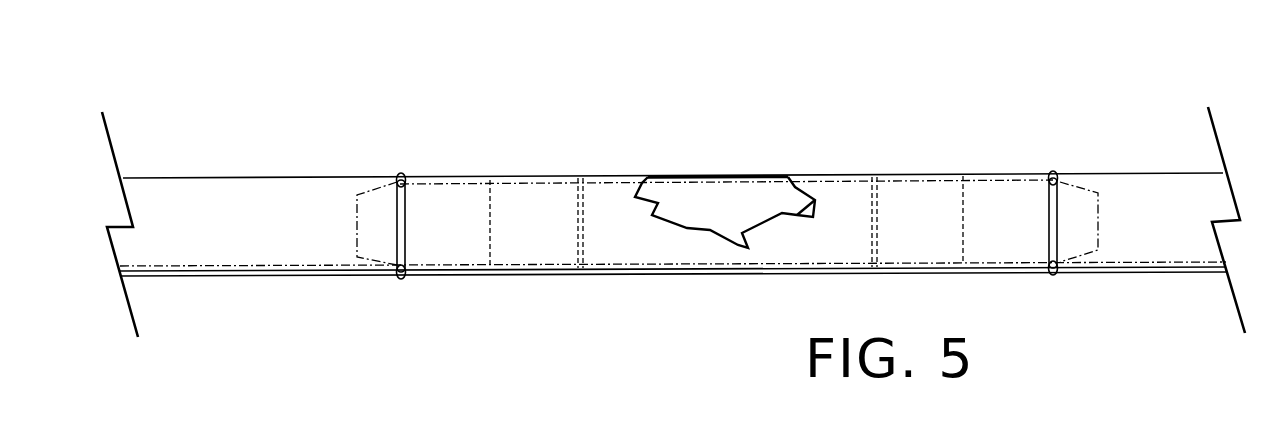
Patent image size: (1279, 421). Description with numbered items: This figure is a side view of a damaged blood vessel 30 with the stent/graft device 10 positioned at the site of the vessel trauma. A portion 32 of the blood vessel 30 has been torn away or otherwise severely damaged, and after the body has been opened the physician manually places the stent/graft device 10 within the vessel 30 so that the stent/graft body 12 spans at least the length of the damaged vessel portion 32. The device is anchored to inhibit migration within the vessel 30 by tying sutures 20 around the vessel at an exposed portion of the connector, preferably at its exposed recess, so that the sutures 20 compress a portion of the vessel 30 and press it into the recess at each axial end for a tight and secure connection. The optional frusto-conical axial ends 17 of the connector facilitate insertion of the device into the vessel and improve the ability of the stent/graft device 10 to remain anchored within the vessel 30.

The stent/graft device 10 is at (683, 168).
The stent/graft body 12 is at (752, 197).
The frusto-conical axial ends 17 is at (383, 195).
The sutures 20 is at (398, 172).
The blood vessel 30 is at (187, 133).
The damaged vessel portion 32 is at (815, 202).